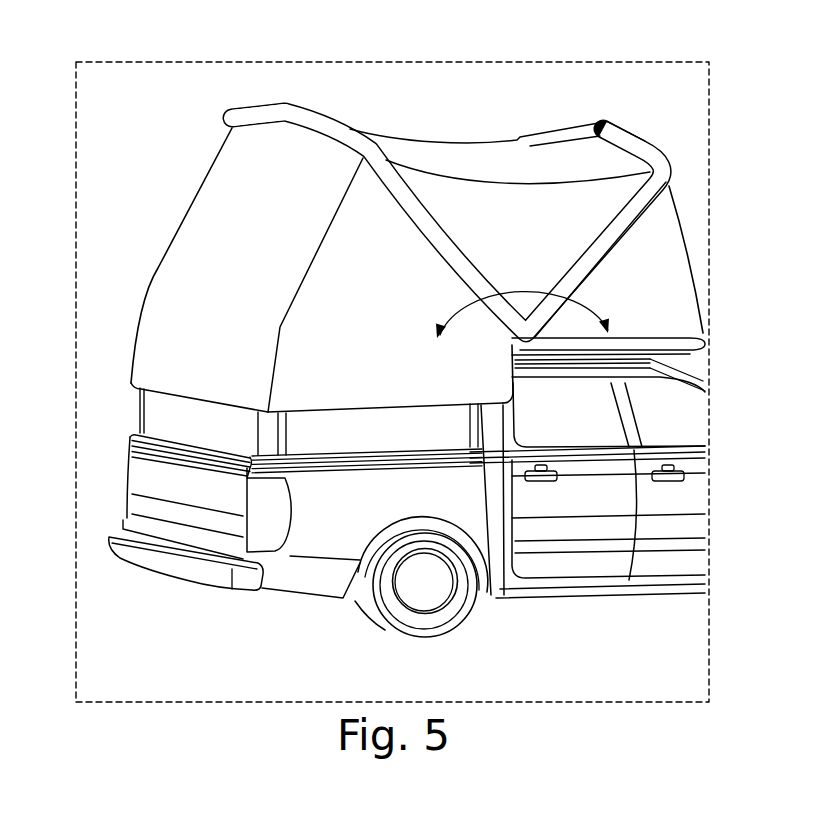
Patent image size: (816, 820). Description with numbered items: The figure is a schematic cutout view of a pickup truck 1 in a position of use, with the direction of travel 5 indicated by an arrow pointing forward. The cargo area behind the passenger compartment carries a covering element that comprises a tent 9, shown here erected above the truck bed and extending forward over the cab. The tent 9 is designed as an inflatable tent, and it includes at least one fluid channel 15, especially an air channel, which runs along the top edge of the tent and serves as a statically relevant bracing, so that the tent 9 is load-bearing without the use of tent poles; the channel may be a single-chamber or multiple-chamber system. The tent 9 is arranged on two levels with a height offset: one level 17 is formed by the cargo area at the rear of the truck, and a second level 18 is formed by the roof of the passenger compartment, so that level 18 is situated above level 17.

The pickup truck 1 is at (503, 86).
The direction of travel 5 is at (694, 617).
The tent 9 is at (284, 160).
The fluid channel 15 is at (648, 163).
The level 17 is at (126, 447).
The level 18 is at (711, 338).